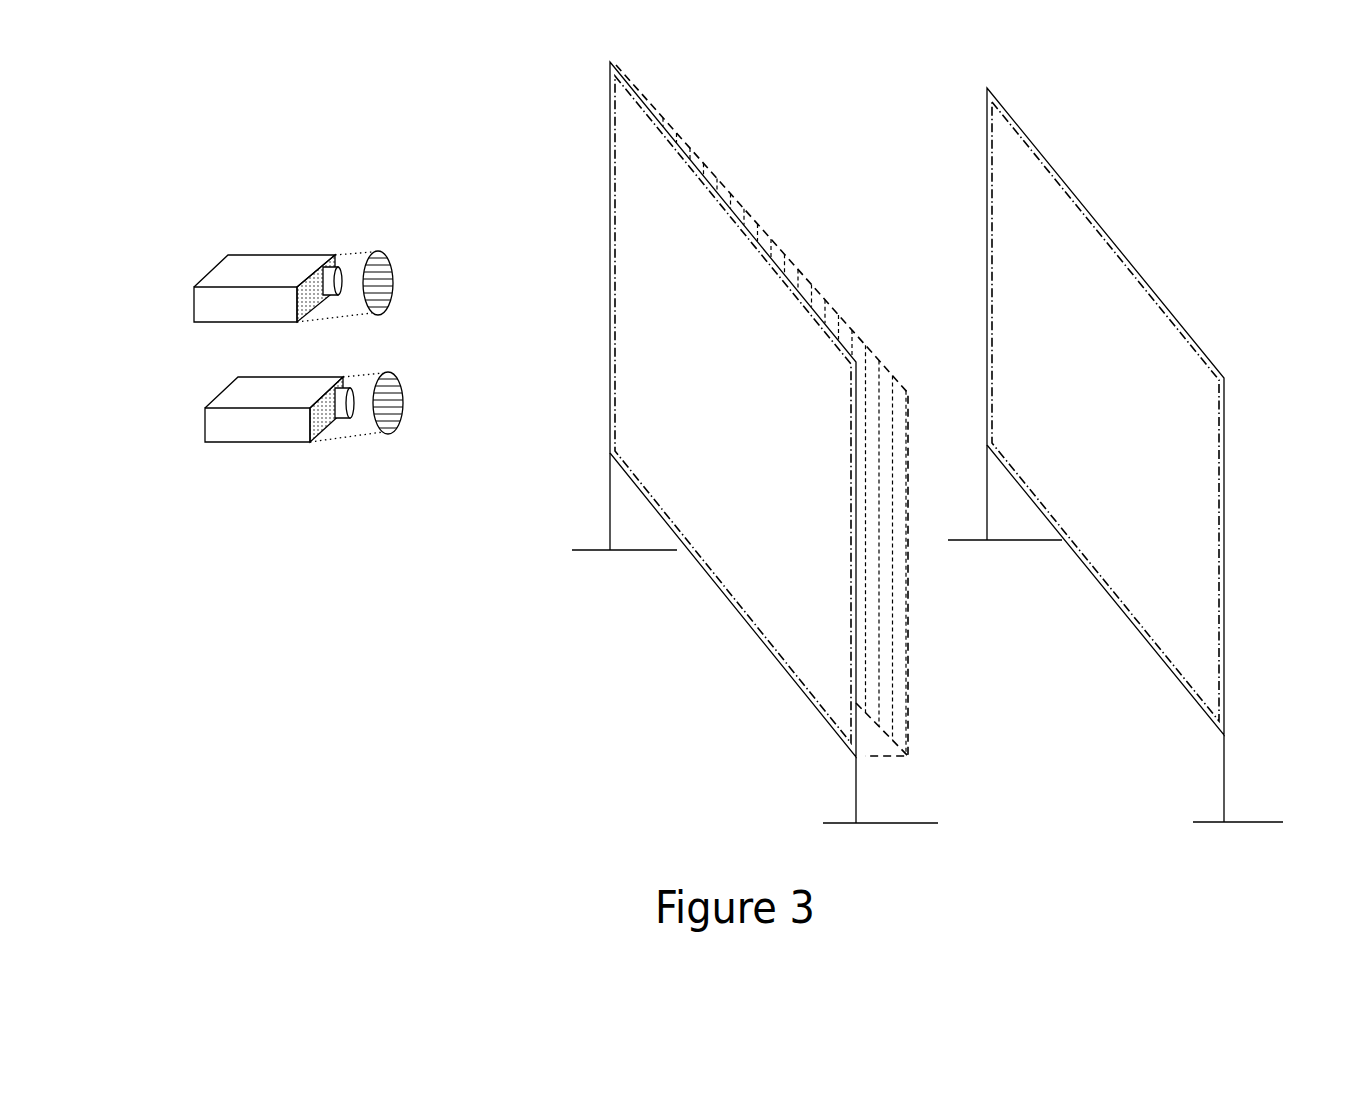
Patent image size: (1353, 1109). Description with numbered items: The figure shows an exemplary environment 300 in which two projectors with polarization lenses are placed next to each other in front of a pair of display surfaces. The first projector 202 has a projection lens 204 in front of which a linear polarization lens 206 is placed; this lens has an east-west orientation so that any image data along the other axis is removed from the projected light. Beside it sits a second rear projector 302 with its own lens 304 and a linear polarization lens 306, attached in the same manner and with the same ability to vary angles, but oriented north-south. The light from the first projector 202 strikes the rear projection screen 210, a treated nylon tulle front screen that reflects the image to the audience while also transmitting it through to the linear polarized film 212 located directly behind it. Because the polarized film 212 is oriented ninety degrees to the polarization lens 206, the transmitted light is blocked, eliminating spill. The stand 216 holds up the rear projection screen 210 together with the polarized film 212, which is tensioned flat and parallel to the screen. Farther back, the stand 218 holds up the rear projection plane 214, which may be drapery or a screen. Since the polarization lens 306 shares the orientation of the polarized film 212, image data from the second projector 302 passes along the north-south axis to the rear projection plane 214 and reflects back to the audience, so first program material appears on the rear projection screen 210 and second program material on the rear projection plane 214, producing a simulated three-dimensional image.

The environment 300 is at (268, 797).
The projector 202 is at (238, 262).
The projection lens 204 is at (343, 272).
The linear polarization lens 206 is at (395, 258).
The second rear projector 302 is at (247, 447).
The lens 304 is at (353, 395).
The linear polarization lens 306 is at (403, 373).
The rear projection screen 210 is at (688, 463).
The linear polarized film 212 is at (678, 110).
The rear projection plane 214 is at (1003, 151).
The stand 216 is at (857, 785).
The stand 218 is at (1223, 782).